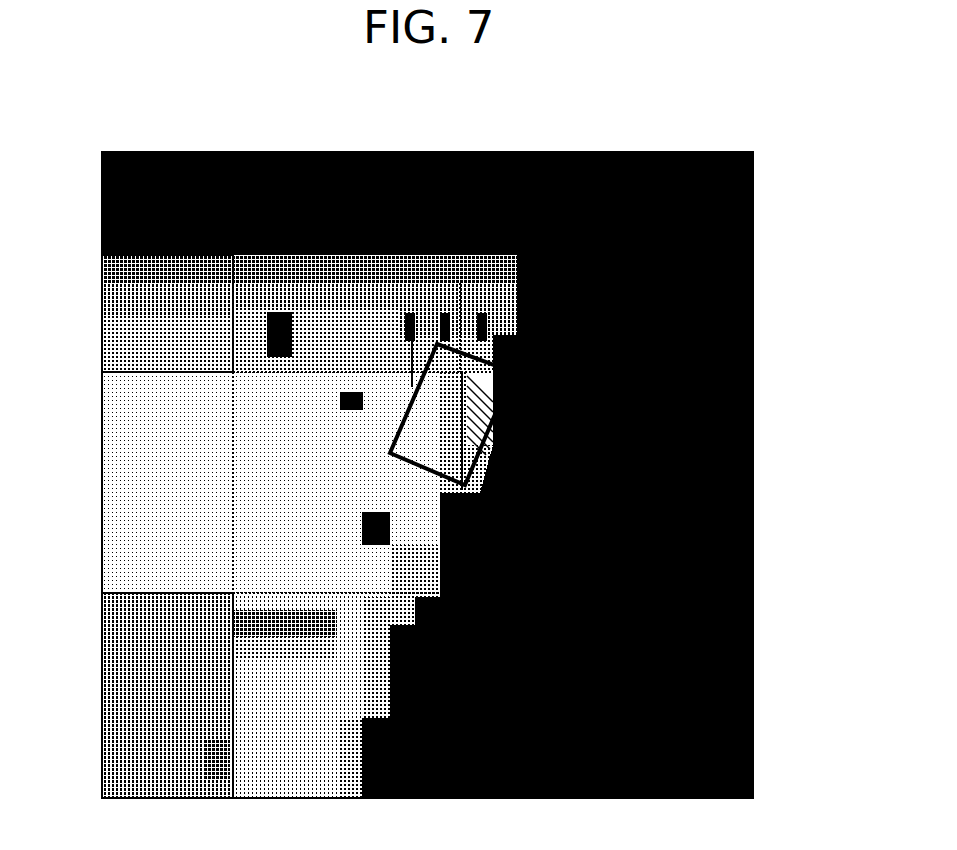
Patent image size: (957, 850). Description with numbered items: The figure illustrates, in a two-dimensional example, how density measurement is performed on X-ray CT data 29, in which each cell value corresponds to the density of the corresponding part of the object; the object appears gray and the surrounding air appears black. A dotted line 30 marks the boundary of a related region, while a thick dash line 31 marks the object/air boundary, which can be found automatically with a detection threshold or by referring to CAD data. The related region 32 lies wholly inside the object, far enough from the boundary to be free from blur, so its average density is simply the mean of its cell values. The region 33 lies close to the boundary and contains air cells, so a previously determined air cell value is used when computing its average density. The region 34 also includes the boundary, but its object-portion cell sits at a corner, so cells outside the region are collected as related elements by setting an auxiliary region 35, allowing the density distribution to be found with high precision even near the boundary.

The X-ray CT data 29 is at (257, 152).
The dotted line 30 is at (233, 502).
The thick dash line 31 is at (385, 252).
The related region 32 is at (160, 620).
The region 33 is at (135, 283).
The region 34 is at (755, 470).
The auxiliary region 35 is at (575, 415).